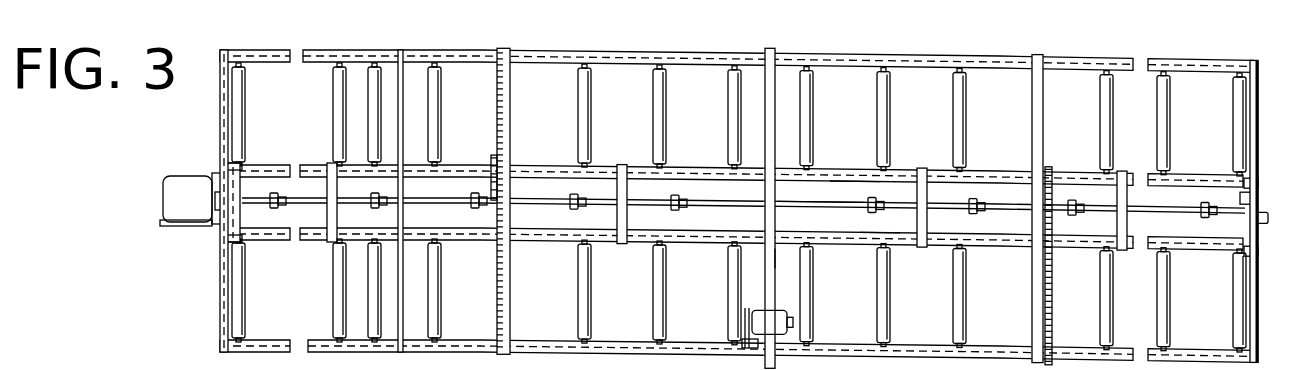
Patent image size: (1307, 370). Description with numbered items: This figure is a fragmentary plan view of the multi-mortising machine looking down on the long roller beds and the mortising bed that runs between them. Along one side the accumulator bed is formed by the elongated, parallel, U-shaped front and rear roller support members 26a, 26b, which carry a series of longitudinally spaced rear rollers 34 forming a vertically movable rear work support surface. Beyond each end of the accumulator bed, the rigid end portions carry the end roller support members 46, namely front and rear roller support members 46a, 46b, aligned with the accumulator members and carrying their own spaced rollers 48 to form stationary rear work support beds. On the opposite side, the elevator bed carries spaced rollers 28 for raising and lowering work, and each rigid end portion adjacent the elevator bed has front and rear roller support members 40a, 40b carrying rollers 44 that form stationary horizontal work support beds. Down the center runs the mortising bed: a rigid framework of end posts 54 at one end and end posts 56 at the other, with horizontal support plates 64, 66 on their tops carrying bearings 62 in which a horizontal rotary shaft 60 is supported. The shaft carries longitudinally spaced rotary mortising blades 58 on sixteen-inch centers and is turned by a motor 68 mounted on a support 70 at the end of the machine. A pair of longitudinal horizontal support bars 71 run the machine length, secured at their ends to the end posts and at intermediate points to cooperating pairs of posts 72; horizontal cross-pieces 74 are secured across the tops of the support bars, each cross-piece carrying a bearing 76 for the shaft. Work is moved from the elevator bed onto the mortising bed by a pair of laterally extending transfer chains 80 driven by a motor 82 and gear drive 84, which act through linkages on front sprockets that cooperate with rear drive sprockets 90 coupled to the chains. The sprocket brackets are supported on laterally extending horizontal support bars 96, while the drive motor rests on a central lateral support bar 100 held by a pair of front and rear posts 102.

The front roller support member 26a is at (736, 343).
The rear roller support member 26b is at (676, 68).
The rollers 28 is at (890, 302).
The rear rollers 34 is at (668, 124).
The front roller support member 40a is at (1066, 352).
The rear roller support member 40b is at (740, 242).
The rollers 44 is at (1100, 280).
The upper frame rail 46 is at (332, 62).
The front roller support member 46a is at (412, 165).
The rear roller support member 46b is at (1216, 64).
The rollers 48 is at (244, 118).
The end posts 54 is at (225, 166).
The end posts 56 is at (1260, 174).
The rotary mortising blades 58 is at (278, 198).
The rotary shaft 60 is at (793, 206).
The bearings 62 is at (1268, 209).
The horizontal support plate 64 is at (238, 223).
The horizontal support plate 66 is at (1262, 188).
The motor 68 is at (172, 184).
The support 70 is at (158, 222).
The horizontal support bars 71 is at (835, 172).
The posts 72 is at (622, 168).
The cross-pieces 74 is at (338, 224).
The bearing 76 is at (340, 196).
The transfer chains 80 is at (1050, 304).
The motor 82 is at (783, 312).
The gear drive 84 is at (745, 332).
The rear drive sprockets 90 is at (496, 162).
The horizontal support bar 96 is at (510, 123).
The horizontal support bar 100 is at (773, 256).
The posts 102 is at (776, 54).